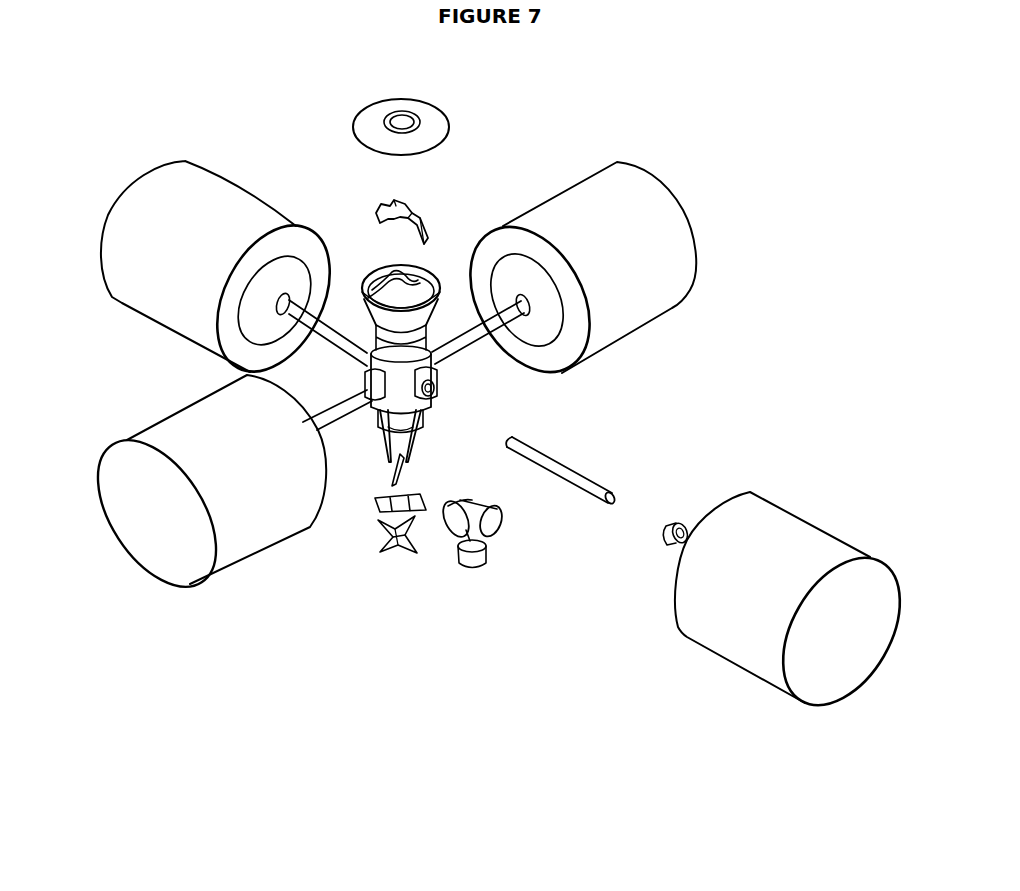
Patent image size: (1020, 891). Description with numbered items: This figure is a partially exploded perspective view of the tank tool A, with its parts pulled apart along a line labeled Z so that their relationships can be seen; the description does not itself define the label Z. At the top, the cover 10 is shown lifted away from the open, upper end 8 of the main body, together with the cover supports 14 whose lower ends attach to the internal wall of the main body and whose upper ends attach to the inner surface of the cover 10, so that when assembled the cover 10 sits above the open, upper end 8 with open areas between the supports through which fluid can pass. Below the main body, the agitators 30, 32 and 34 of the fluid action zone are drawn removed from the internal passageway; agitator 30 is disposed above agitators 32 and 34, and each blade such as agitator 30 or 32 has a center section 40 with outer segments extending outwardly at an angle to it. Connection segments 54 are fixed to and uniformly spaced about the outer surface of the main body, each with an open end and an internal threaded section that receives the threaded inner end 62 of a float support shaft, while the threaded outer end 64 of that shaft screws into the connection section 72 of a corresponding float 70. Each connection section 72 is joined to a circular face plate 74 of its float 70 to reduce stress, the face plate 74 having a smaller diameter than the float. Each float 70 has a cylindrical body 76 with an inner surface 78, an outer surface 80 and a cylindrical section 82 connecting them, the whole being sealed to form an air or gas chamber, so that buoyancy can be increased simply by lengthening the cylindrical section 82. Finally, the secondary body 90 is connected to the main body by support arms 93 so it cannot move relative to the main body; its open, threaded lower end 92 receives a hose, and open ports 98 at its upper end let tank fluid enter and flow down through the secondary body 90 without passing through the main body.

The tank tool A is at (659, 103).
The axis Z is at (372, 380).
The open upper end 8 is at (443, 282).
The cover 10 is at (474, 122).
The cover supports 14 is at (408, 205).
The agitator 30 is at (406, 479).
The agitator 32 is at (370, 514).
The agitator 34 is at (400, 567).
The center section 40 is at (580, 467).
The connection segment 54 is at (440, 382).
The threaded inner end 62 is at (532, 428).
The outer end 64 is at (623, 480).
The float 70 is at (243, 137).
The connection section 72 is at (283, 297).
The circular face plate 74 is at (247, 307).
The cylindrical body 76 is at (815, 485).
The inner surface 78 is at (512, 247).
The outer surface 80 is at (840, 680).
The cylindrical section 82 is at (833, 553).
The secondary body 90 is at (538, 546).
The lower end 92 is at (490, 578).
The support arms 93 is at (382, 446).
The open ports 98 is at (445, 590).